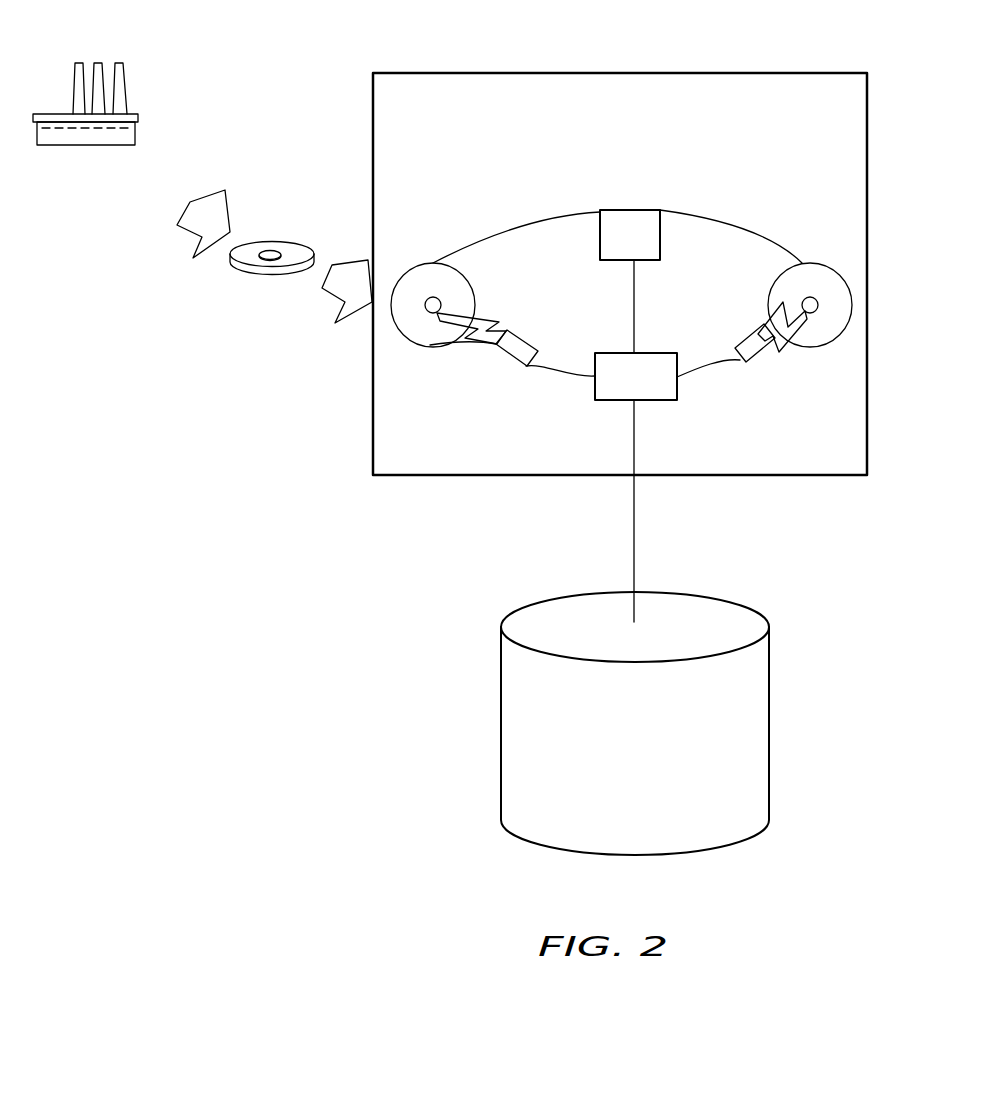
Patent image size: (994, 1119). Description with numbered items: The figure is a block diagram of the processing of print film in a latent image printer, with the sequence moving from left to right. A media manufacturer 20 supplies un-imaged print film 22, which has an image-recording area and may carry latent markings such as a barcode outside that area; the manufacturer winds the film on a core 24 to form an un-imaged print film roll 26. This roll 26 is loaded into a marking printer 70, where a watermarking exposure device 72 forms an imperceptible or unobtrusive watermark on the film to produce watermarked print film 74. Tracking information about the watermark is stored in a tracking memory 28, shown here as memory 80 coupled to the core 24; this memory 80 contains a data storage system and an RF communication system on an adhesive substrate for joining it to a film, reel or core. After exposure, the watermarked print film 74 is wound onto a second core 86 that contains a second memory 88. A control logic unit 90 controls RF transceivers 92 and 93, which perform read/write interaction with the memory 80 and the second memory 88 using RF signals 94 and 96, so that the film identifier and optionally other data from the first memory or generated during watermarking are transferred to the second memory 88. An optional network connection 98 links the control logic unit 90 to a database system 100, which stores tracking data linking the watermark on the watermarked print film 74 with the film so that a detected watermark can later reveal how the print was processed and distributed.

The media manufacturer 20 is at (138, 128).
The un-imaged print film 22 is at (265, 243).
The core 24 is at (243, 270).
The un-imaged print film roll 26 is at (273, 278).
The tracking memory 28 is at (445, 330).
The marking printer 70 is at (630, 72).
The watermarking exposure device 72 is at (637, 211).
The watermarked print film 74 is at (757, 236).
The memory 80 is at (236, 268).
The second core 86 is at (821, 300).
The second memory 88 is at (822, 322).
The control logic unit 90 is at (650, 358).
The RF transceiver 92 is at (522, 336).
The RF transceiver 93 is at (750, 368).
The RF signal 94 is at (483, 315).
The RF signal 96 is at (770, 327).
The network connection 98 is at (636, 512).
The database system 100 is at (770, 712).